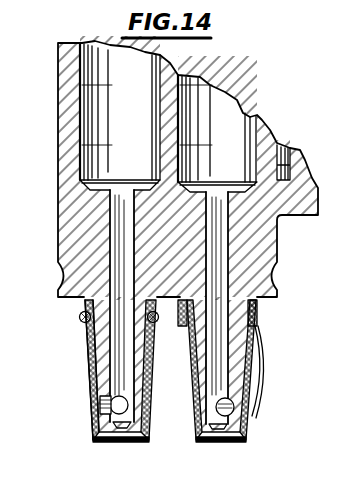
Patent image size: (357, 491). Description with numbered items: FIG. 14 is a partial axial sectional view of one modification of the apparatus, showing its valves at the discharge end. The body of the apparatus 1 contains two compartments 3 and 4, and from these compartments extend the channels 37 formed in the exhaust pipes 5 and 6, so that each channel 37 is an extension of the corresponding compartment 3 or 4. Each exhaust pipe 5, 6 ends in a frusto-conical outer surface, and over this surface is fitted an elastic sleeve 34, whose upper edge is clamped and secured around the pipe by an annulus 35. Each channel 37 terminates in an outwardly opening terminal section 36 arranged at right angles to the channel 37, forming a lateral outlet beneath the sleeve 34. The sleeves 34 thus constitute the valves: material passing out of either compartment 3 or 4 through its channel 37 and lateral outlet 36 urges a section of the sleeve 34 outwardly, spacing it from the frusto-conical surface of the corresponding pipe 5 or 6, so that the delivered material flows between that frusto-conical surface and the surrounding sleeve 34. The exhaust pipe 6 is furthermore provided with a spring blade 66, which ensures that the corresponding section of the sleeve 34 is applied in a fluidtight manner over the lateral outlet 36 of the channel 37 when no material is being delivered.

The housing 1 is at (75, 99).
The compartment 3 is at (100, 62).
The compartment 4 is at (221, 100).
The exhaust pipe 5 is at (94, 371).
The exhaust pipe 6 is at (228, 372).
The elastic sleeve 34 is at (100, 346).
The annulus 35 is at (79, 318).
The terminal section 36 is at (100, 410).
The channel 37 is at (120, 221).
The spring blade 66 is at (258, 394).